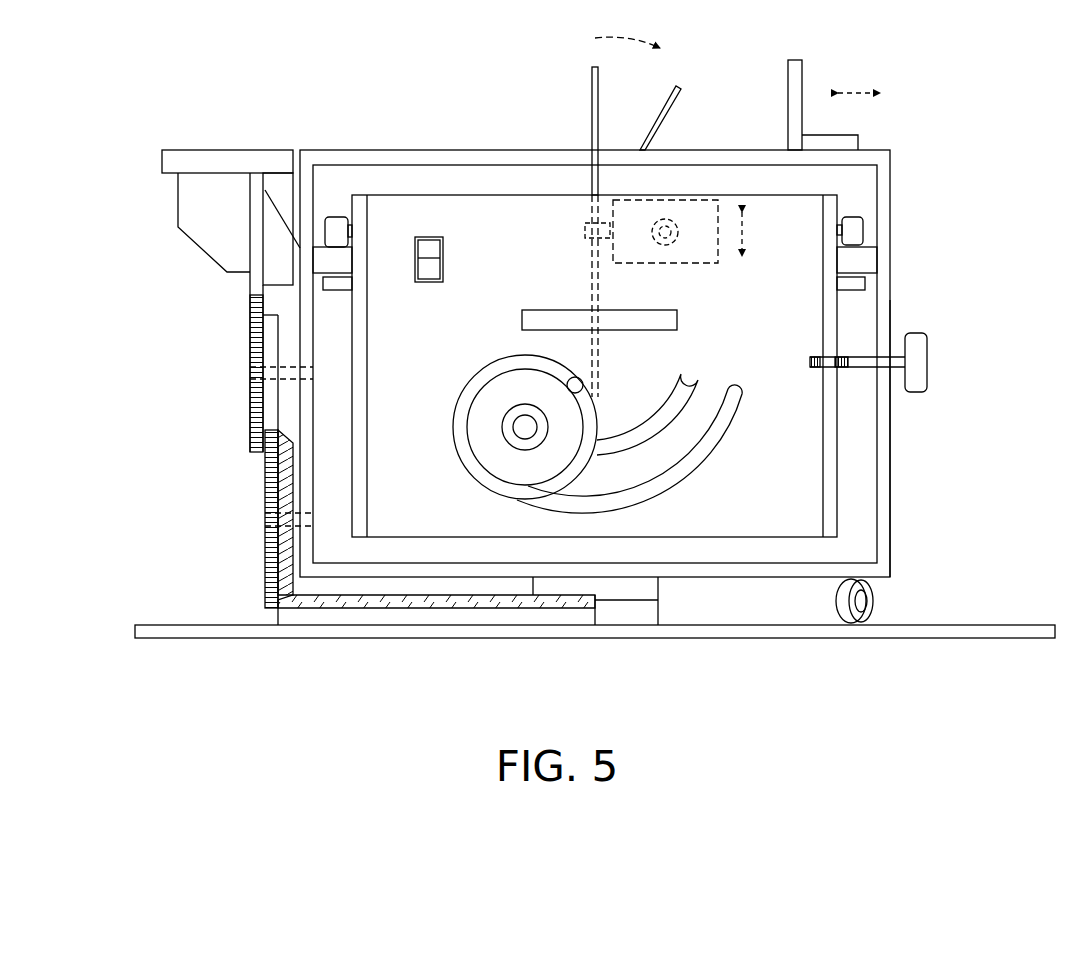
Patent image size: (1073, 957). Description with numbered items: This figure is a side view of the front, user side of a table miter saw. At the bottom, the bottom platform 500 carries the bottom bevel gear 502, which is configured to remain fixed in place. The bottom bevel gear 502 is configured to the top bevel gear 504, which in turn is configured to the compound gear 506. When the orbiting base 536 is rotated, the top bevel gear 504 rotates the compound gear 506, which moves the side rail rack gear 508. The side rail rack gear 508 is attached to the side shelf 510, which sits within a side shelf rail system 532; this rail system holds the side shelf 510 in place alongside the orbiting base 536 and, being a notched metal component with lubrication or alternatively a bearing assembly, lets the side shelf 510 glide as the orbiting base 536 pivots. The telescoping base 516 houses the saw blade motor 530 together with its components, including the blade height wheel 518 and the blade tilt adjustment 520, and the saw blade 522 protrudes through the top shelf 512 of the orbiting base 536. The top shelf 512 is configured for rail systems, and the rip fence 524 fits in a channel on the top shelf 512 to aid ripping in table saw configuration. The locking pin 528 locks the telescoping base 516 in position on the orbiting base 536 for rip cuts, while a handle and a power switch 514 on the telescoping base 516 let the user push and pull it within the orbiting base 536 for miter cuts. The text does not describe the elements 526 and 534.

The bottom platform 500 is at (595, 652).
The bottom bevel gear 502 is at (370, 607).
The top bevel gear 504 is at (265, 510).
The compound gear 506 is at (250, 370).
The side rail rack gear 508 is at (253, 275).
The side shelf 510 is at (227, 143).
The top shelf 512 is at (595, 369).
The power switch 514 is at (454, 259).
The telescoping base 516 is at (594, 366).
The blade height wheel 518 is at (565, 404).
The blade tilt adjustment 520 is at (633, 443).
The saw blade 522 is at (636, 217).
The rip fence 524 is at (834, 101).
The bearing 526 is at (871, 228).
The locking pin 528 is at (890, 601).
The saw blade motor 530 is at (687, 246).
The side shelf rail system 532 is at (278, 228).
The side wall 534 is at (885, 478).
The orbiting base 536 is at (920, 360).